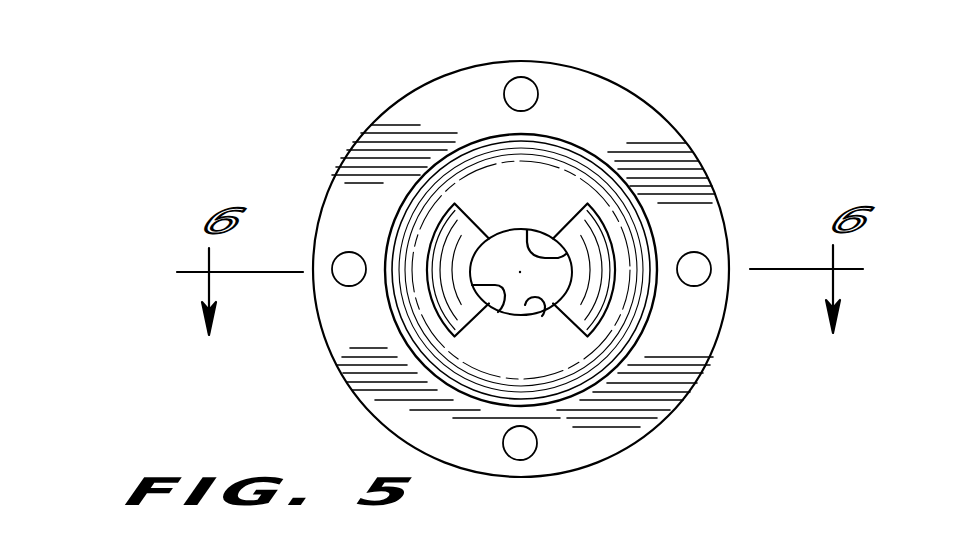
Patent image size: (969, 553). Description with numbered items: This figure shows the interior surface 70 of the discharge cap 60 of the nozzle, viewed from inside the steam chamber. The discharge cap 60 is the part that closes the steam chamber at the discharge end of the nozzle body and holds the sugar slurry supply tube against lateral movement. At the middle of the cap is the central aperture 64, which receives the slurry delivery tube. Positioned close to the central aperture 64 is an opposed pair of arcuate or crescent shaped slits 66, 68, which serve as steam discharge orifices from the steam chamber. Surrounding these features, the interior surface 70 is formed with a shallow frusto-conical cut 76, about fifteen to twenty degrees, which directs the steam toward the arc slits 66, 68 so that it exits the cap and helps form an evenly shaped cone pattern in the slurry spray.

The discharge cap 60 is at (643, 100).
The interior surface 70 is at (542, 151).
The frusto-conical cut 76 is at (472, 183).
The arcuate slit 68 is at (527, 230).
The arcuate slit 66 is at (498, 312).
The central aperture 64 is at (542, 316).